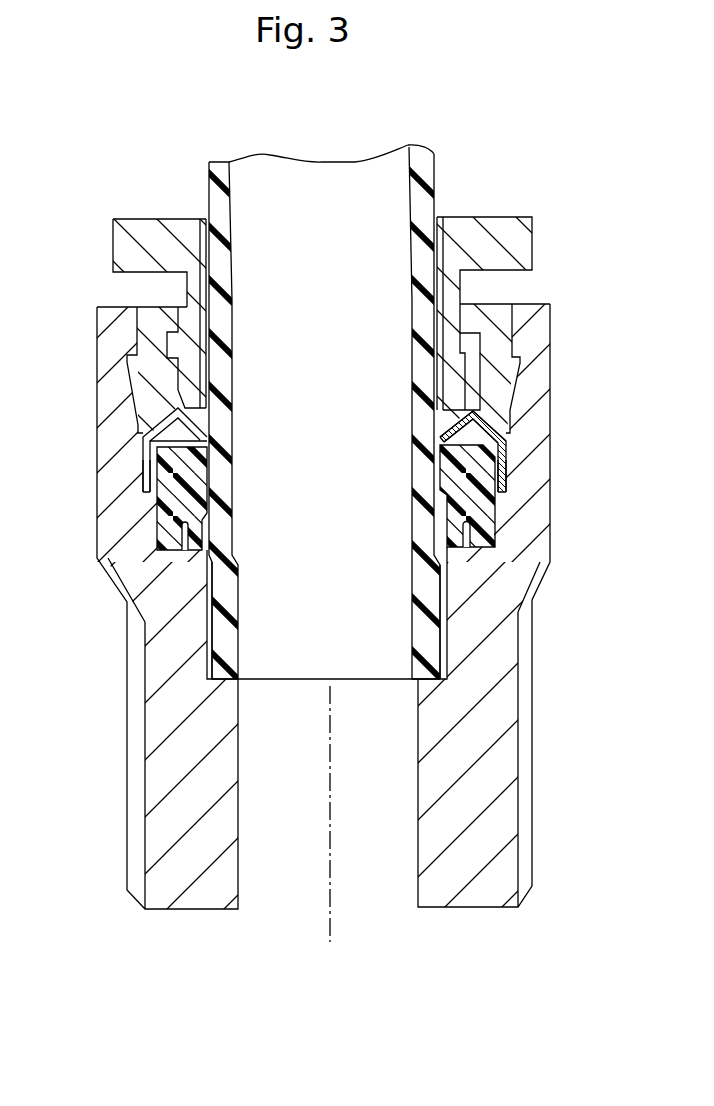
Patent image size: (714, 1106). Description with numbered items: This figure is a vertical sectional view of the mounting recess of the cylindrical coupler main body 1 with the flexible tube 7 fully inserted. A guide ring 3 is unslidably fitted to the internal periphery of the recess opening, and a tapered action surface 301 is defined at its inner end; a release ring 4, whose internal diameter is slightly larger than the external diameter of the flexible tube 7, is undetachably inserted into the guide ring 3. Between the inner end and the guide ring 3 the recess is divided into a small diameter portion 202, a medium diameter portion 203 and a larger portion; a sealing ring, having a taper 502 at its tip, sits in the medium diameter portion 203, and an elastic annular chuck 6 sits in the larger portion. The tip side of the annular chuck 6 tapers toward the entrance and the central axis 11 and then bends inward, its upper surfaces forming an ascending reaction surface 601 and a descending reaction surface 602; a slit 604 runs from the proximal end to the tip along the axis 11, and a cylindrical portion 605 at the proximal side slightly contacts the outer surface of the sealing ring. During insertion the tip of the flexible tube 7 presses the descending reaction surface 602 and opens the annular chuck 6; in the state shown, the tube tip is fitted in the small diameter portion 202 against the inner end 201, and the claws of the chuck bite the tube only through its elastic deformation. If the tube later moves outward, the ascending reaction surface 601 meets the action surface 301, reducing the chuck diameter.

The coupler main body 1 is at (532, 738).
The guide ring 3 is at (499, 312).
The release ring 4 is at (494, 226).
The annular chuck 6 is at (506, 457).
The flexible tube 7 is at (214, 202).
The central axis 11 is at (332, 830).
The inner end 201 is at (238, 668).
The small diameter portion 202 is at (214, 628).
The medium diameter portion 203 is at (157, 518).
The action surface 301 is at (147, 422).
The taper 502 is at (447, 475).
The ascending reaction surface 601 is at (506, 414).
The descending reaction surface 602 is at (438, 420).
The slit 604 is at (142, 468).
The cylindrical portion 605 is at (507, 479).